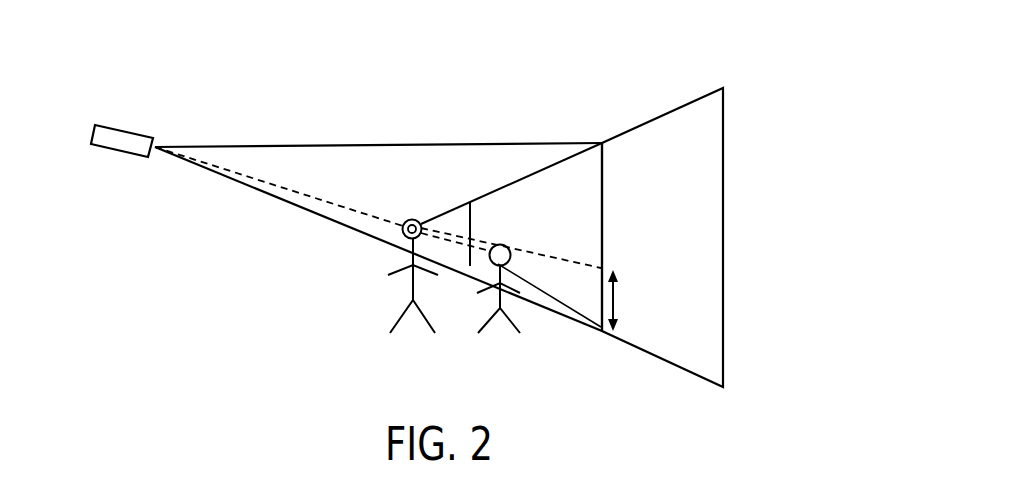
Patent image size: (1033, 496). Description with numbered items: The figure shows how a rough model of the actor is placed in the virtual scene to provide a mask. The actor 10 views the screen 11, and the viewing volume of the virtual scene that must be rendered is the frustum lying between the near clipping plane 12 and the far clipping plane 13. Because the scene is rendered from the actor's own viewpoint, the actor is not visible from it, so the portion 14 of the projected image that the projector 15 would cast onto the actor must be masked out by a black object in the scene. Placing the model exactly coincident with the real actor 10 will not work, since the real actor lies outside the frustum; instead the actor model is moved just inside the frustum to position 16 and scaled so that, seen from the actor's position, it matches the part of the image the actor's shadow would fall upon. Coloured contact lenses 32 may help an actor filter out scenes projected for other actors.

The actor 10 is at (410, 285).
The screen 11 is at (603, 237).
The near clipping plane 12 is at (469, 188).
The far clipping plane 13 is at (725, 177).
The portion of the projected image 14 is at (615, 300).
The projector 15 is at (123, 128).
The position of actor model 16 is at (494, 302).
The coloured contact lenses 32 is at (403, 226).